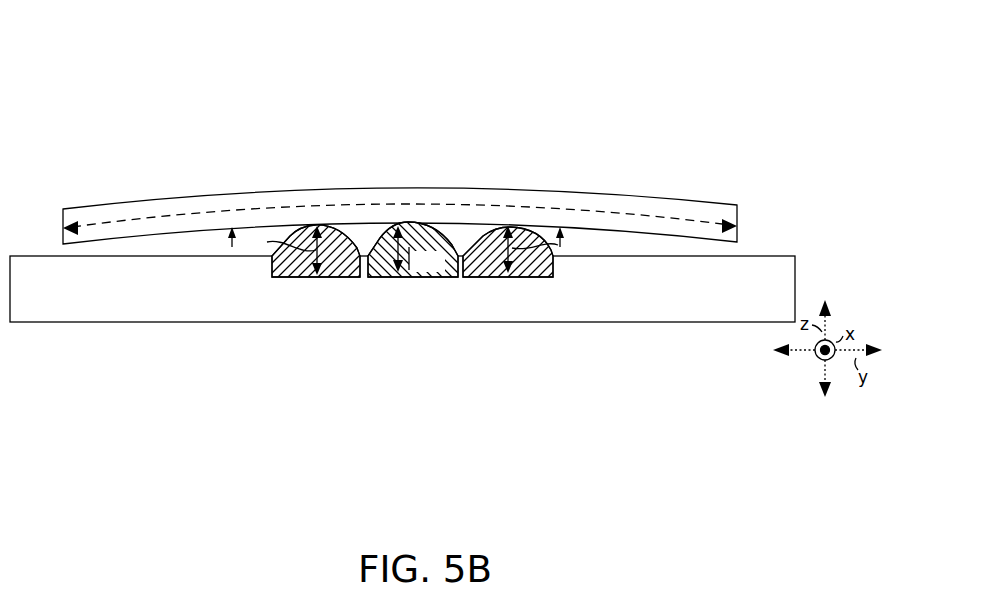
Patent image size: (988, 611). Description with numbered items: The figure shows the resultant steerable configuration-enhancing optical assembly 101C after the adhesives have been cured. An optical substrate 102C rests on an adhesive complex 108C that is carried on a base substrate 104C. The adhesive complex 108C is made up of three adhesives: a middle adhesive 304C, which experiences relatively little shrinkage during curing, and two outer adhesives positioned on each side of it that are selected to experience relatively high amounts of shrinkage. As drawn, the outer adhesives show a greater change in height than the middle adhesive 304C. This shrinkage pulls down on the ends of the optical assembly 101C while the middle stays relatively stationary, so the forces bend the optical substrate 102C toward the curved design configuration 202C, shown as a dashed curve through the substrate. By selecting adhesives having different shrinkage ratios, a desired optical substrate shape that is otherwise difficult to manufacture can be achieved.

The steerable configuration-enhancing optical assembly 101C is at (622, 94).
The optical substrate 102C is at (393, 182).
The base substrate 104C is at (402, 289).
The adhesive complex 108C is at (560, 337).
The design configuration 202C is at (123, 218).
The adhesive 304C is at (388, 277).